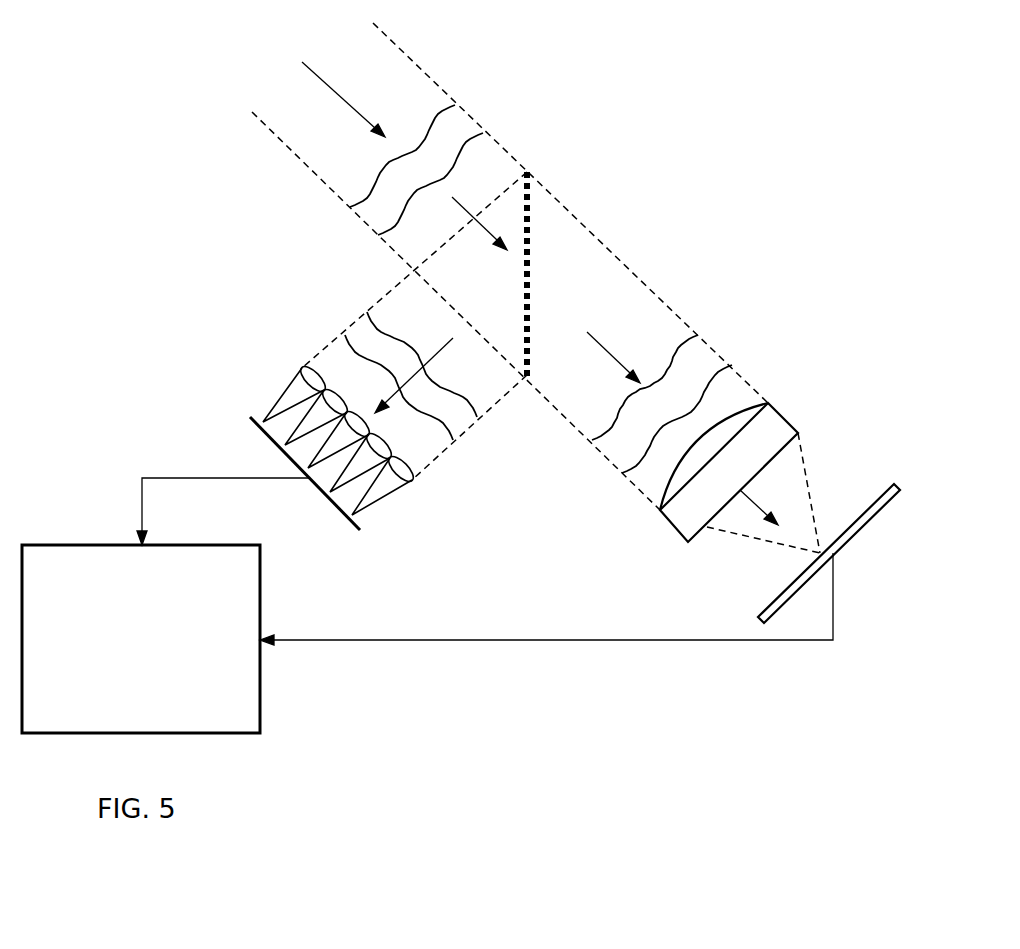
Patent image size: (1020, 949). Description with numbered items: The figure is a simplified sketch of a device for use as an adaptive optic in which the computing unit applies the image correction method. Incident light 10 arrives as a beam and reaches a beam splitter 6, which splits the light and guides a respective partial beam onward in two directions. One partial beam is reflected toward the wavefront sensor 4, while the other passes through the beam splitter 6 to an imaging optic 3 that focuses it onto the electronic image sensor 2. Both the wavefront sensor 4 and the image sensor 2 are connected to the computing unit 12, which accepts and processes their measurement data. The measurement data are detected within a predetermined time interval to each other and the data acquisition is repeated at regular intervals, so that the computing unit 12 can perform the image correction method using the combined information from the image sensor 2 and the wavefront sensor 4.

The electronic image sensor 2 is at (829, 545).
The imaging optic 3 is at (740, 458).
The wavefront sensor 4 is at (333, 436).
The beam splitter 6 is at (543, 254).
The incident light 10 is at (392, 130).
The computing unit 12 is at (141, 639).